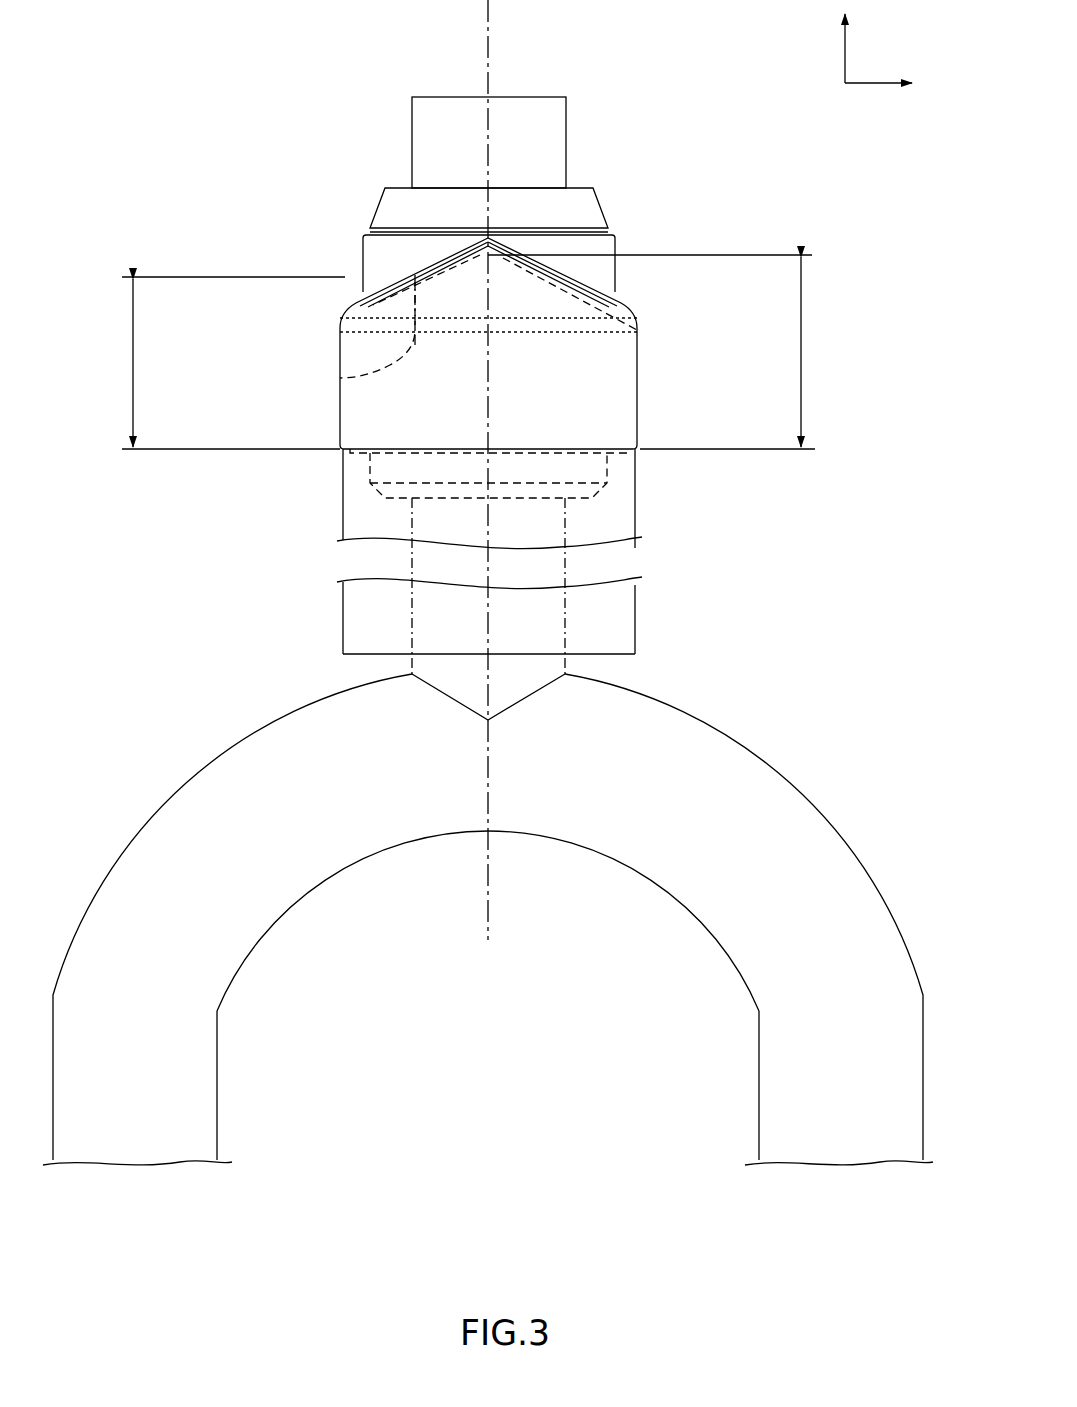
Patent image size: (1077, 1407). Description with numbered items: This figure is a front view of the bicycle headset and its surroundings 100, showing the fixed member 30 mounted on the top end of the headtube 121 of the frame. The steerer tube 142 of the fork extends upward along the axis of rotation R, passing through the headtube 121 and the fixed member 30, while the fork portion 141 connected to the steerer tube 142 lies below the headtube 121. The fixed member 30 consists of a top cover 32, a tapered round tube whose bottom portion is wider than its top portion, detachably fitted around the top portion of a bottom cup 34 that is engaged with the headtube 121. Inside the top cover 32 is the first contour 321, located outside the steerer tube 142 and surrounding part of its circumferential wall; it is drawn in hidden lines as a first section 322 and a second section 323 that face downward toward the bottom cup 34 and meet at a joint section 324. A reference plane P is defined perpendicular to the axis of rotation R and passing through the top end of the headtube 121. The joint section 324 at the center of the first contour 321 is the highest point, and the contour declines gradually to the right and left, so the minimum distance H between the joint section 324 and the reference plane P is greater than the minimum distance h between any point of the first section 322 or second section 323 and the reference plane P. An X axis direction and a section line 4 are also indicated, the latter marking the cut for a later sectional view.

The vacuum cleaner / apparatus 100 is at (815, 601).
The headtube 121 is at (636, 612).
The fork portion 141 is at (805, 789).
The steerer tube 142 is at (566, 143).
The fixed member 30 is at (228, 462).
The top cover 32 is at (340, 415).
The first contour 321 is at (565, 300).
The first section 322 is at (340, 378).
The second section 323 is at (549, 309).
The joint section 324 is at (492, 255).
The bottom cup 34 is at (372, 493).
The axis of rotation R is at (490, 46).
The reference plane P is at (763, 450).
The minimum distance H is at (650, 351).
The minimum distance h is at (222, 362).
The X axis X is at (893, 59).
The section line 4 is at (492, 11).